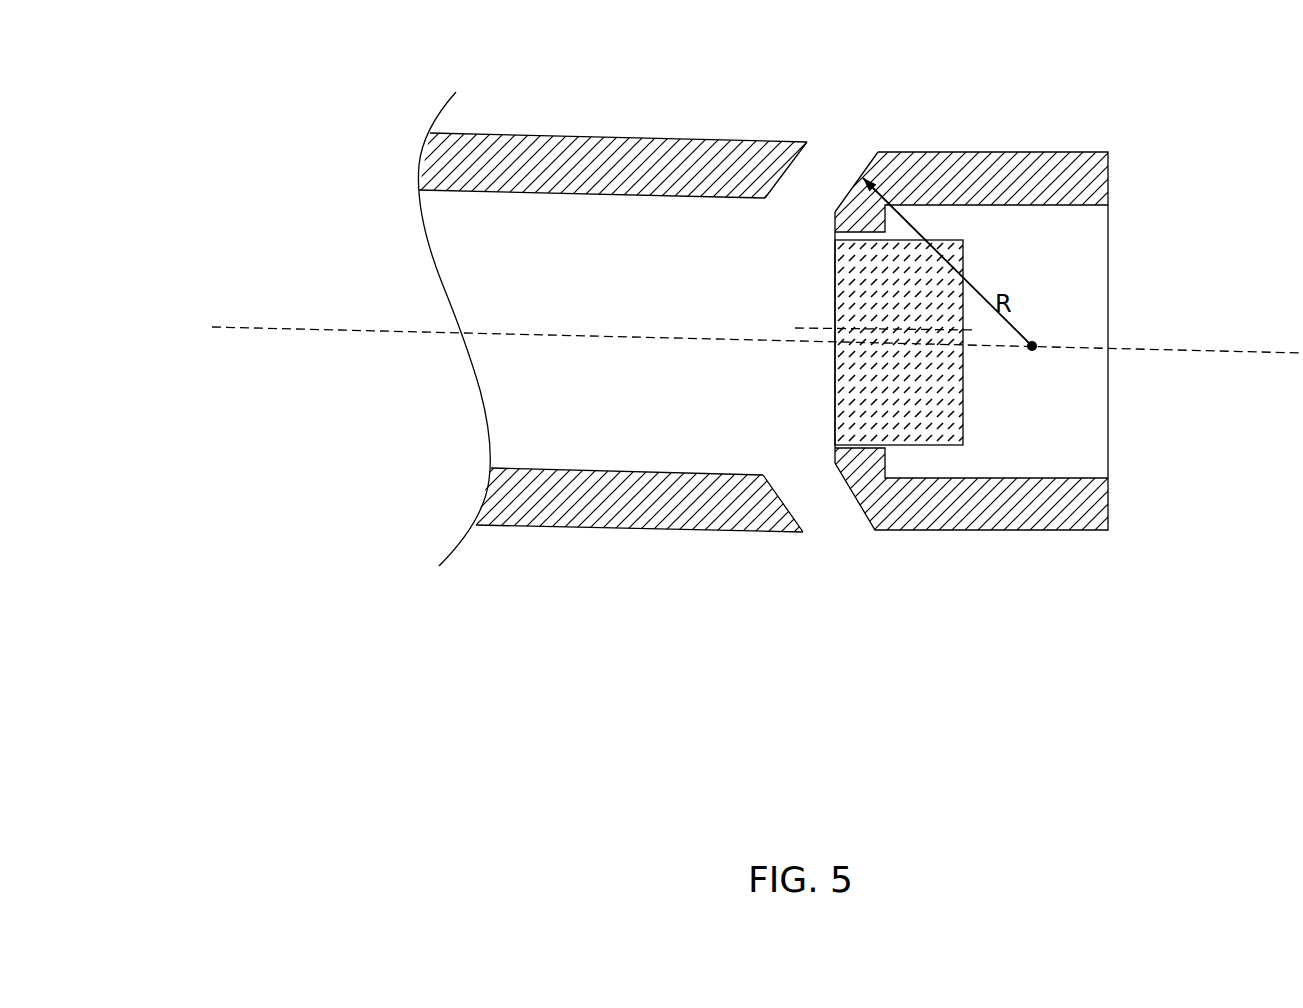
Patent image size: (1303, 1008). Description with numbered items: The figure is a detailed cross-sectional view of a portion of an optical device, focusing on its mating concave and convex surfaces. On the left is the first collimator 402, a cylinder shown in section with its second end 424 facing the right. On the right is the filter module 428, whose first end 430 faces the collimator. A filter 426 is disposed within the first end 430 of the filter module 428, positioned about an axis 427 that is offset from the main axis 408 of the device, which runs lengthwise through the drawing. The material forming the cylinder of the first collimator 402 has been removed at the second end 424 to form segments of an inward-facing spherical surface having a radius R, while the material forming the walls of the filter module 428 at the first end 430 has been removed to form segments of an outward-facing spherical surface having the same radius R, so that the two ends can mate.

The first collimator 402 is at (652, 132).
The axis 408 is at (267, 305).
The second end of first collimator 424 is at (787, 158).
The filter 426 is at (927, 437).
The axis of filter 427 is at (795, 328).
The filter module 428 is at (1087, 542).
The first end of filter module 430 is at (872, 152).